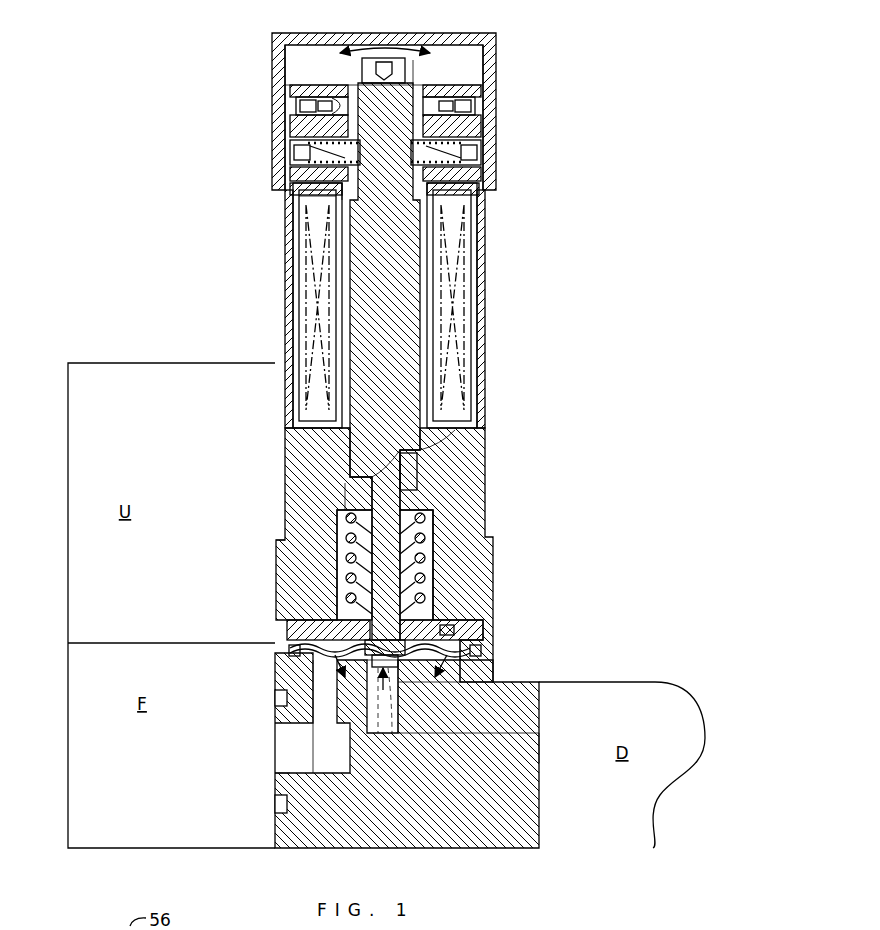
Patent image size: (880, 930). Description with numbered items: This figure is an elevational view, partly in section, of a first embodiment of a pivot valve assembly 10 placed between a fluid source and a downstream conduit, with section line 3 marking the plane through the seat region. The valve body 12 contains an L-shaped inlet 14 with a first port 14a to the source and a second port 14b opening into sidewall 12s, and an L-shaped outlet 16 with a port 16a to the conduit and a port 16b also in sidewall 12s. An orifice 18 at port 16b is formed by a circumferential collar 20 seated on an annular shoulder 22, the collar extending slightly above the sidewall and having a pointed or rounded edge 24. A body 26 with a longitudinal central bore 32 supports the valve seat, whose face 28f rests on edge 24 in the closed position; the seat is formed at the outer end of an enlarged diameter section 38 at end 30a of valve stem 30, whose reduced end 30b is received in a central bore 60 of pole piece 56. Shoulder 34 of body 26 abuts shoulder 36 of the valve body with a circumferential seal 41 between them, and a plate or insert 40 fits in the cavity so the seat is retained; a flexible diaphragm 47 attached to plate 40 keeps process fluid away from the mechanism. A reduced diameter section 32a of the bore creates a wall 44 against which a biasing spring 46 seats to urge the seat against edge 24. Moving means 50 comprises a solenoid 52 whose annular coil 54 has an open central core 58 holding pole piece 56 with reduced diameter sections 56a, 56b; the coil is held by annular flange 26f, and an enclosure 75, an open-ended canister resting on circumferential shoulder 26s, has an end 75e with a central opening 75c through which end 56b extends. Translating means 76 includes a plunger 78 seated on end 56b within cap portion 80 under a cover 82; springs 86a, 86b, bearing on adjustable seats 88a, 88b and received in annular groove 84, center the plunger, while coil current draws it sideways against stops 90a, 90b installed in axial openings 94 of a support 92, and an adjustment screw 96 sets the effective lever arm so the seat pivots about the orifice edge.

The section line 3 is at (391, 674).
The valve assembly 10 is at (443, 529).
The valve body 12 is at (455, 764).
The sidewall 12s is at (460, 666).
The inlet 14 is at (297, 748).
The first port 14a is at (275, 761).
The second port 14b is at (310, 666).
The outlet 16 is at (468, 745).
The port 16a is at (541, 740).
The port 16b is at (395, 701).
The orifice 18 is at (430, 733).
The circumferential collar 20 is at (374, 705).
The annular shoulder 22 is at (392, 712).
The edge 24 is at (480, 626).
The body 26 is at (384, 531).
The annular flange 26f is at (345, 420).
The circumferential shoulder 26s is at (283, 590).
The face 28f is at (330, 690).
The valve stem 30 is at (468, 536).
The first end 30a is at (430, 585).
The second end 30b is at (420, 470).
The central bore 32 is at (328, 544).
The reduced diameter section 32a is at (347, 487).
The circumferential shoulder 34 is at (287, 634).
The circumferential shoulder 36 is at (287, 665).
The enlarged diameter section 38 is at (287, 630).
The plate or insert 40 is at (480, 641).
The circumferential seal 41 is at (472, 661).
The wall 44 is at (340, 535).
The biasing spring 46 is at (345, 548).
The flexible diaphragm 47 is at (486, 634).
The means for moving valve stem 50 is at (368, 305).
The solenoid 52 is at (487, 279).
The coil 54 is at (462, 312).
The pole piece 56 is at (442, 316).
The reduced diameter section 56a is at (455, 438).
The reduced diameter section 56b is at (470, 196).
The central core 58 is at (425, 250).
The central bore 60 is at (405, 452).
The enclosure 75 is at (354, 305).
The central opening 75c is at (340, 200).
The end 75e is at (338, 186).
The means for translating movement 76 is at (490, 70).
The plunger 78 is at (402, 71).
The cap portion 80 is at (397, 322).
The cover 82 is at (272, 60).
The annular groove 84 is at (425, 147).
The spring 86a is at (483, 178).
The spring 86b is at (290, 177).
The seat 88a is at (482, 155).
The seat 88b is at (290, 152).
The stop 90a is at (483, 100).
The stop 90b is at (290, 97).
The support 92 is at (315, 78).
The axial openings 94 is at (292, 120).
The adjustment screw 96 is at (410, 62).